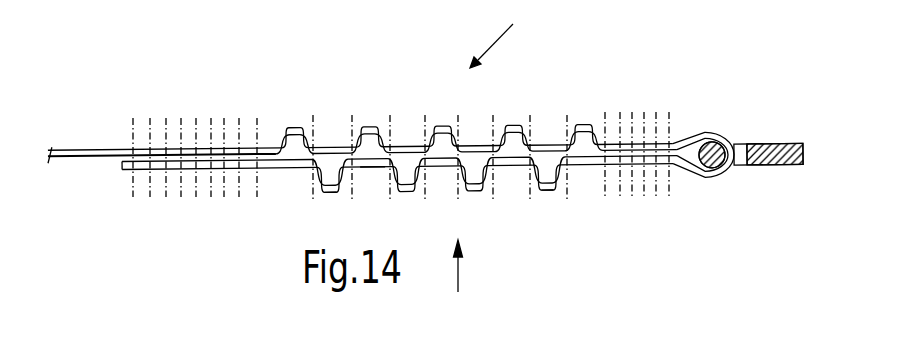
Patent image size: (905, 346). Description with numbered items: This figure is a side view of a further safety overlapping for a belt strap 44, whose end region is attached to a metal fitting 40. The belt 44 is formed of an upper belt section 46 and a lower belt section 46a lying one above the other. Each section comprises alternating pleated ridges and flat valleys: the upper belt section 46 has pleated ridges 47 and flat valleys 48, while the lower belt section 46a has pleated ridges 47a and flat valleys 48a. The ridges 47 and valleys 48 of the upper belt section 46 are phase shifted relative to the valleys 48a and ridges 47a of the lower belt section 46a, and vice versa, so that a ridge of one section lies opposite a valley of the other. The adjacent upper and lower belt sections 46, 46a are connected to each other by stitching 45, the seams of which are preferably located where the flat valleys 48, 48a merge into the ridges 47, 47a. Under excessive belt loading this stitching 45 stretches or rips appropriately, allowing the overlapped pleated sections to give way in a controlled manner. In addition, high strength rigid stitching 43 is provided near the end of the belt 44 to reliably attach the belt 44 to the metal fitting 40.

The metal fitting 40 is at (766, 144).
The high strength rigid stitching 43 is at (133, 133).
The belt strap 44 is at (81, 149).
The stitching 45 is at (313, 124).
The upper belt section 46 is at (509, 37).
The lower belt section 46a is at (461, 283).
The pleated ridges 47 is at (295, 126).
The pleated ridges 47a is at (328, 190).
The flat valleys 48 is at (335, 148).
The flat valleys 48a is at (372, 168).